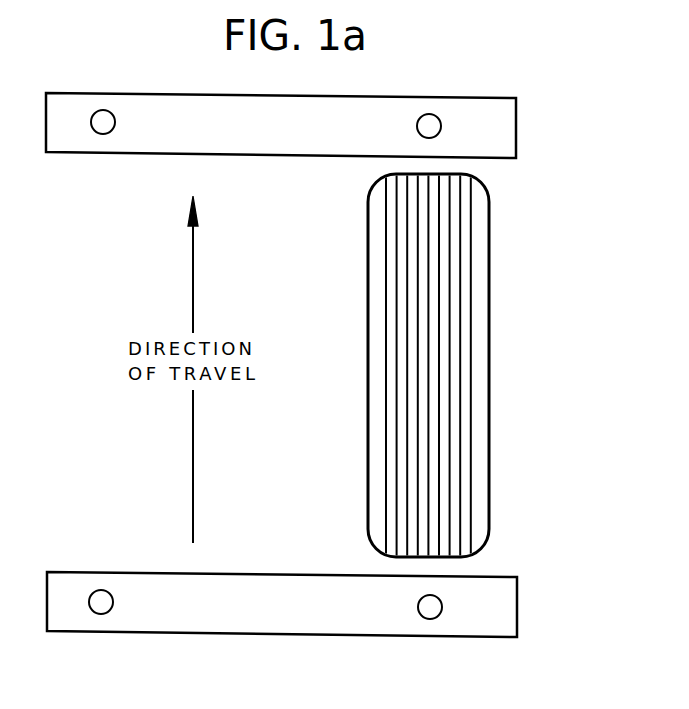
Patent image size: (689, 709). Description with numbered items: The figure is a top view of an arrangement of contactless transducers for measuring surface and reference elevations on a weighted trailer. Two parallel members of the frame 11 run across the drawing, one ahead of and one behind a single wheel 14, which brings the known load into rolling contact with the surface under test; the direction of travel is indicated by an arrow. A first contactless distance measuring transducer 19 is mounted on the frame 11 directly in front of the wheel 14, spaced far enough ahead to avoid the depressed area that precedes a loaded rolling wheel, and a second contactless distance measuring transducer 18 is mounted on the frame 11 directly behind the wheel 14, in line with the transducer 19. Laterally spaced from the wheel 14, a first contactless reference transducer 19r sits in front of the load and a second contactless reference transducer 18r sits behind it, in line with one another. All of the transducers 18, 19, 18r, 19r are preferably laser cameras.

The frame 11 is at (516, 128).
The wheel 14 is at (489, 384).
The second contactless distance measuring transducer 18 is at (429, 126).
The second contactless reference transducer 18r is at (102, 121).
The first contactless distance measuring transducer 19 is at (430, 607).
The first contactless reference transducer 19r is at (101, 602).